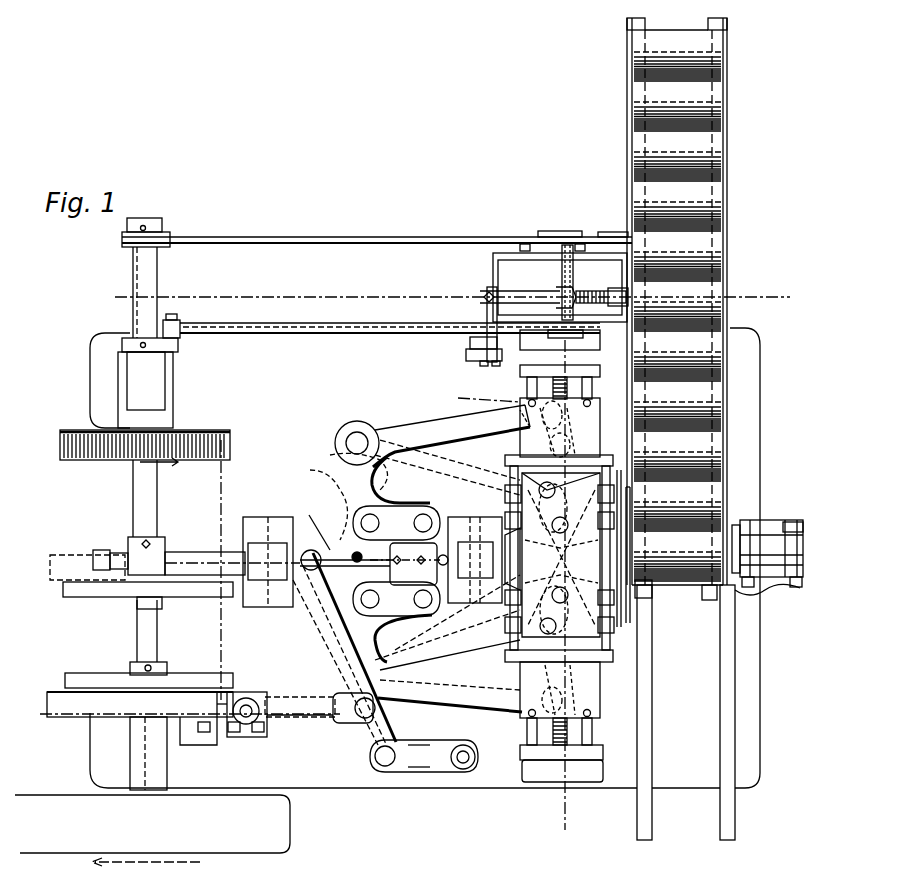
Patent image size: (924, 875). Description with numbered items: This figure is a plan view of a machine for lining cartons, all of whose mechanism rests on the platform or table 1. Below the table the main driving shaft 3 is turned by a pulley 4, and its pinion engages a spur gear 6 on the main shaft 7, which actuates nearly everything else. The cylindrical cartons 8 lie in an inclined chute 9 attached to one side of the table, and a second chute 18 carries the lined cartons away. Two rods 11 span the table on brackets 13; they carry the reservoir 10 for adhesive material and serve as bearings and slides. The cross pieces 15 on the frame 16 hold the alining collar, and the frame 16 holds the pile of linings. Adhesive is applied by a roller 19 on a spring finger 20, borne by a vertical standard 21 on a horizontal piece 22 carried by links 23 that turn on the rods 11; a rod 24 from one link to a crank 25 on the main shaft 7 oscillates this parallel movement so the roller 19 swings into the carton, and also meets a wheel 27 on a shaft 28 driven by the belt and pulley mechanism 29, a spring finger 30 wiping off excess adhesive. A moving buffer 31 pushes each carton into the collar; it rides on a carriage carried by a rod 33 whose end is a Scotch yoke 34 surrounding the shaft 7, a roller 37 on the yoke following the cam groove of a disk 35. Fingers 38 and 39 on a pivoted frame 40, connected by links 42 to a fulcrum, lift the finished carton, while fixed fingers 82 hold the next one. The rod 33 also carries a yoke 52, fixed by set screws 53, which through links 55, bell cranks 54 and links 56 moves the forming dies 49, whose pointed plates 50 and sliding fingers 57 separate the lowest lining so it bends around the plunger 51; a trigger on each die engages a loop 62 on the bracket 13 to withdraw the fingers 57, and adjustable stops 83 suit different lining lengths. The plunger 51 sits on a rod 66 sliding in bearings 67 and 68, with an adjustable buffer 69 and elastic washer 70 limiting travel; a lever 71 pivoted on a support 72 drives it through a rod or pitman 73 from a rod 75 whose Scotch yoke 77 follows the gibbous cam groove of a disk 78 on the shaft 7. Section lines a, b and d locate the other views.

The platform or table 1 is at (425, 558).
The main driving shaft 3 is at (158, 282).
The pulley 4 is at (163, 830).
The spur gear 6 is at (153, 448).
The main shaft 7 is at (158, 503).
The cartons or boxes 8 is at (716, 150).
The chute 9 is at (695, 307).
The reservoir for adhesive material 10 is at (496, 262).
The rods 11 is at (525, 244).
The brackets 13 is at (522, 373).
The cross pieces 15 is at (619, 470).
The frame 16 is at (608, 455).
The second chute 18 is at (690, 735).
The roller 19 is at (576, 290).
The spring finger 20 is at (490, 298).
The vertical standard 21 is at (478, 360).
The horizontal piece 22 is at (467, 358).
The links 23 is at (470, 340).
The rod 24 is at (390, 318).
The crank 25 is at (180, 345).
The wheel 27 is at (602, 289).
The shaft 28 is at (563, 231).
The belt and pulley mechanism 29 is at (380, 237).
The spring finger 30 is at (618, 232).
The moving buffer 31 is at (748, 525).
The rod 33 is at (355, 500).
The Scotch yoke 34 is at (92, 558).
The disk 35 is at (66, 596).
The roller 37 is at (207, 592).
The finger 38 is at (785, 522).
The finger 39 is at (767, 600).
The pivoted frame 40 is at (792, 590).
The links 42 is at (748, 590).
The forming dies 49 is at (566, 551).
The plates 50 is at (560, 558).
The plunger 51 is at (561, 555).
The yoke 52 is at (430, 545).
The set screws 53 is at (405, 570).
The bell cranks 54 is at (432, 558).
The links 55 is at (395, 515).
The links 56 is at (525, 428).
The fingers 57 is at (556, 490).
The loop 62 is at (592, 390).
The rod 66 is at (315, 537).
The bearing 67 is at (479, 560).
The bearing 68 is at (268, 545).
The adjustable buffer 69 is at (130, 545).
The elastic washer 70 is at (250, 598).
The lever 71 is at (330, 640).
The support 72 is at (400, 775).
The rod or pitman 73 is at (318, 720).
The rod 75 is at (221, 720).
The Scotch yoke 77 is at (78, 704).
The disk 78 is at (78, 676).
The fixed fingers 82 is at (655, 595).
The adjustable stops 83 is at (676, 700).
The section line a- a is at (446, 400).
The section line b- b is at (592, 589).
The section line d- d is at (178, 712).